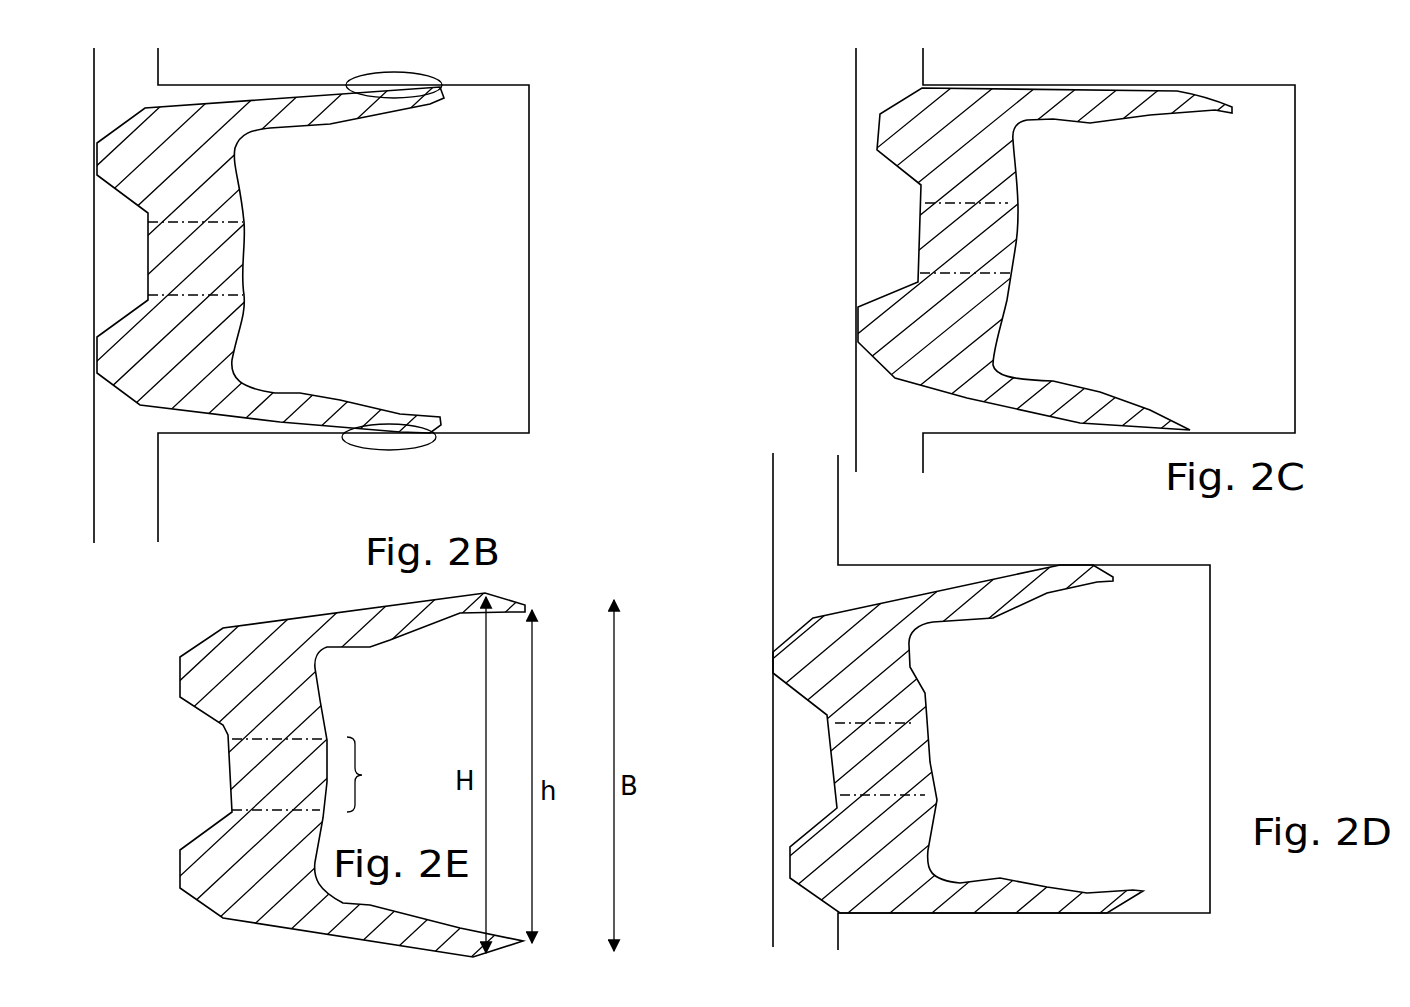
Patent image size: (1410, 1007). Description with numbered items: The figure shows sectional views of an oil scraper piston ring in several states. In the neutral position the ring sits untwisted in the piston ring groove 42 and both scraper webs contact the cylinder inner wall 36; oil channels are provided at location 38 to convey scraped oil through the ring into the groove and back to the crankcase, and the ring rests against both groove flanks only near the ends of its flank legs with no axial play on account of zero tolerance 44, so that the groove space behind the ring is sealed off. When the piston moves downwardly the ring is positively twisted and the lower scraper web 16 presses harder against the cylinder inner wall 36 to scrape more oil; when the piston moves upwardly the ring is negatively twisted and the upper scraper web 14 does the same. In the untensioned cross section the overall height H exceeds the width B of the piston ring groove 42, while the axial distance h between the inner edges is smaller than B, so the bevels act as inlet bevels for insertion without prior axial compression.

In FIG. 2D, the upper scraper web 14 is at (790, 675).
In FIG. 2C, the lower scraper web 16 is at (880, 330).
In FIG. 2B, the cylinder inner wall 36 is at (94, 507).
In FIG. 2C, the cylinder inner wall 36 is at (856, 450).
In FIG. 2D, the cylinder inner wall 36 is at (773, 592).
In FIG. 2B, the oil channel location 38 is at (262, 225).
In FIG. 2B, the piston ring groove 42 is at (473, 358).
In FIG. 2B, the zero tolerance 44 is at (446, 73).